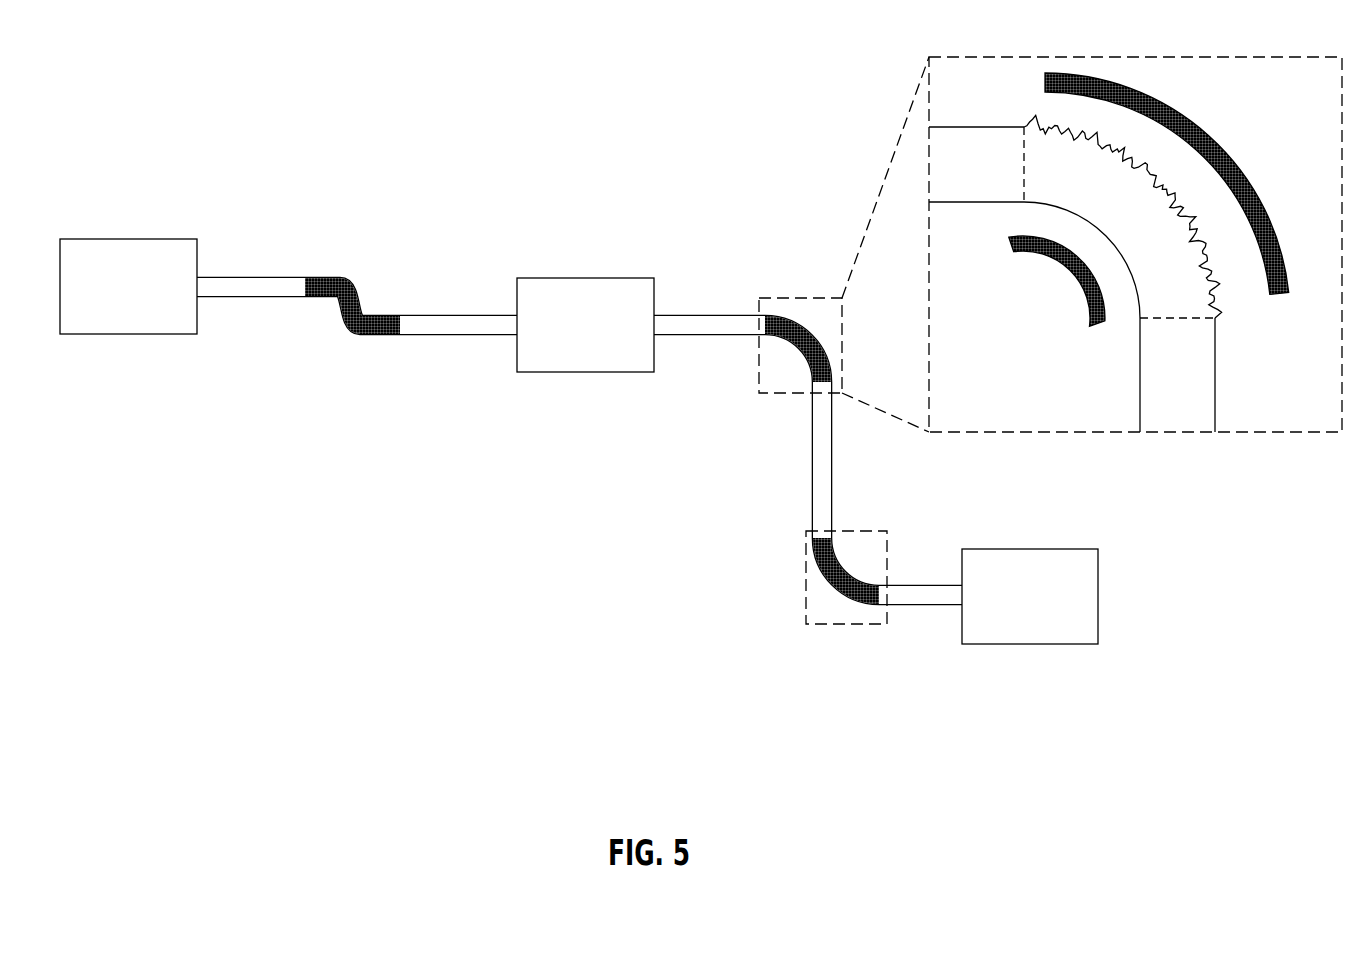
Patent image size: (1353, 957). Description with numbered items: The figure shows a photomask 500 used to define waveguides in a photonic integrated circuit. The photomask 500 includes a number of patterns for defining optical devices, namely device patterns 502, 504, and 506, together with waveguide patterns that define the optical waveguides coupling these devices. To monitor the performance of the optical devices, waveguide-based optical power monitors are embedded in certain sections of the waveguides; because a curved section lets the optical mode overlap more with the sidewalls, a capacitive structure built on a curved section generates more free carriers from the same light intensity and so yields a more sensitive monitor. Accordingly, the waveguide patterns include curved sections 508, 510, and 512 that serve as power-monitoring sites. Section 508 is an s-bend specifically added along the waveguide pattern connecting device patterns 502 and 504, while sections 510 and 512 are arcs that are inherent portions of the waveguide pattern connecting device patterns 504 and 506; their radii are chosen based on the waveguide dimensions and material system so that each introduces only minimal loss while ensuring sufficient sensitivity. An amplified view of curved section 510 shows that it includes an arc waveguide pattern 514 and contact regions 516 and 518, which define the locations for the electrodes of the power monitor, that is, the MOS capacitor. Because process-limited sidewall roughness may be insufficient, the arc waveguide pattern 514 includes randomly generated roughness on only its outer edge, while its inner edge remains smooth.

The photomask 500 is at (305, 483).
The device pattern 502 is at (143, 296).
The device pattern 504 is at (600, 335).
The device pattern 506 is at (1045, 606).
The s-bend 508 is at (344, 280).
The curved section 510 is at (783, 298).
The curved section 512 is at (859, 628).
The arc waveguide pattern 514 is at (1186, 300).
The contact region 516 is at (1218, 148).
The contact region 518 is at (1065, 280).